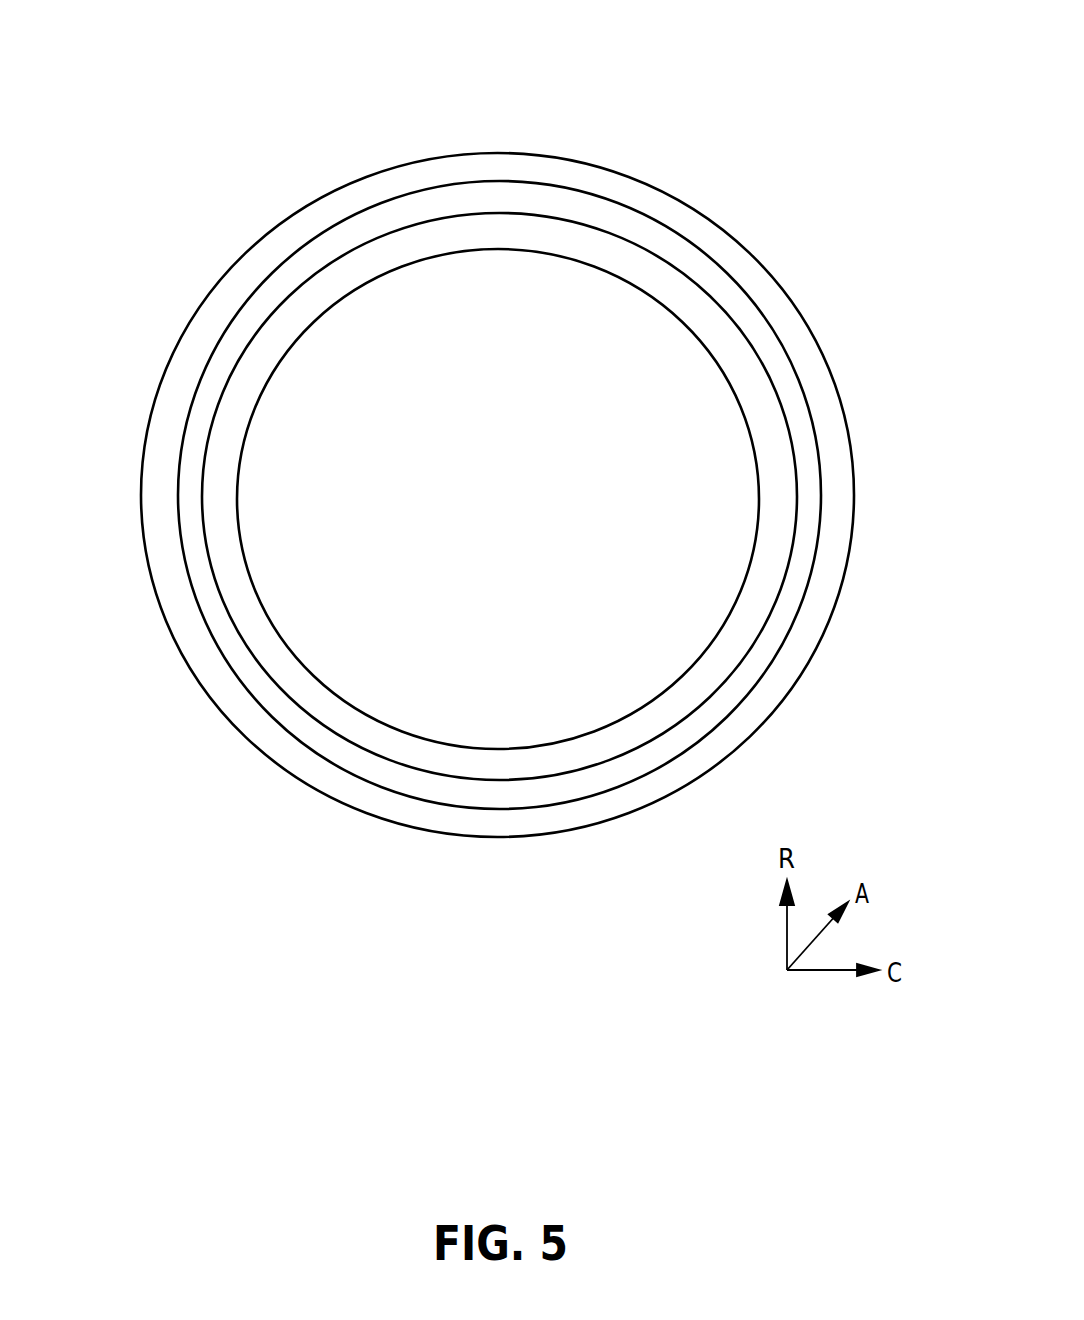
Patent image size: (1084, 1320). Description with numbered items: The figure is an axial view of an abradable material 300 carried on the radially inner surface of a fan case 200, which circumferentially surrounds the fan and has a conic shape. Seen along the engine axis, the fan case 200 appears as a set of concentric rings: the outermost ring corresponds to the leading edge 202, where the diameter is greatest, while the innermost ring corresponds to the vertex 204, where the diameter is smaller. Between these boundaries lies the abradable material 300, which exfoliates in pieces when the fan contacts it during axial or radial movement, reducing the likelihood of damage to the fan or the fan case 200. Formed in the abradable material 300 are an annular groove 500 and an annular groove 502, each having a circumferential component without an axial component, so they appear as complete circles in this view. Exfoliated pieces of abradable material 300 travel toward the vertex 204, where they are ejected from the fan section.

The fan case 200 is at (198, 68).
The leading edge 202 is at (440, 158).
The vertex 204 is at (304, 667).
The abradable material 300 is at (222, 308).
The annular groove 500 is at (667, 222).
The annular groove 502 is at (793, 453).